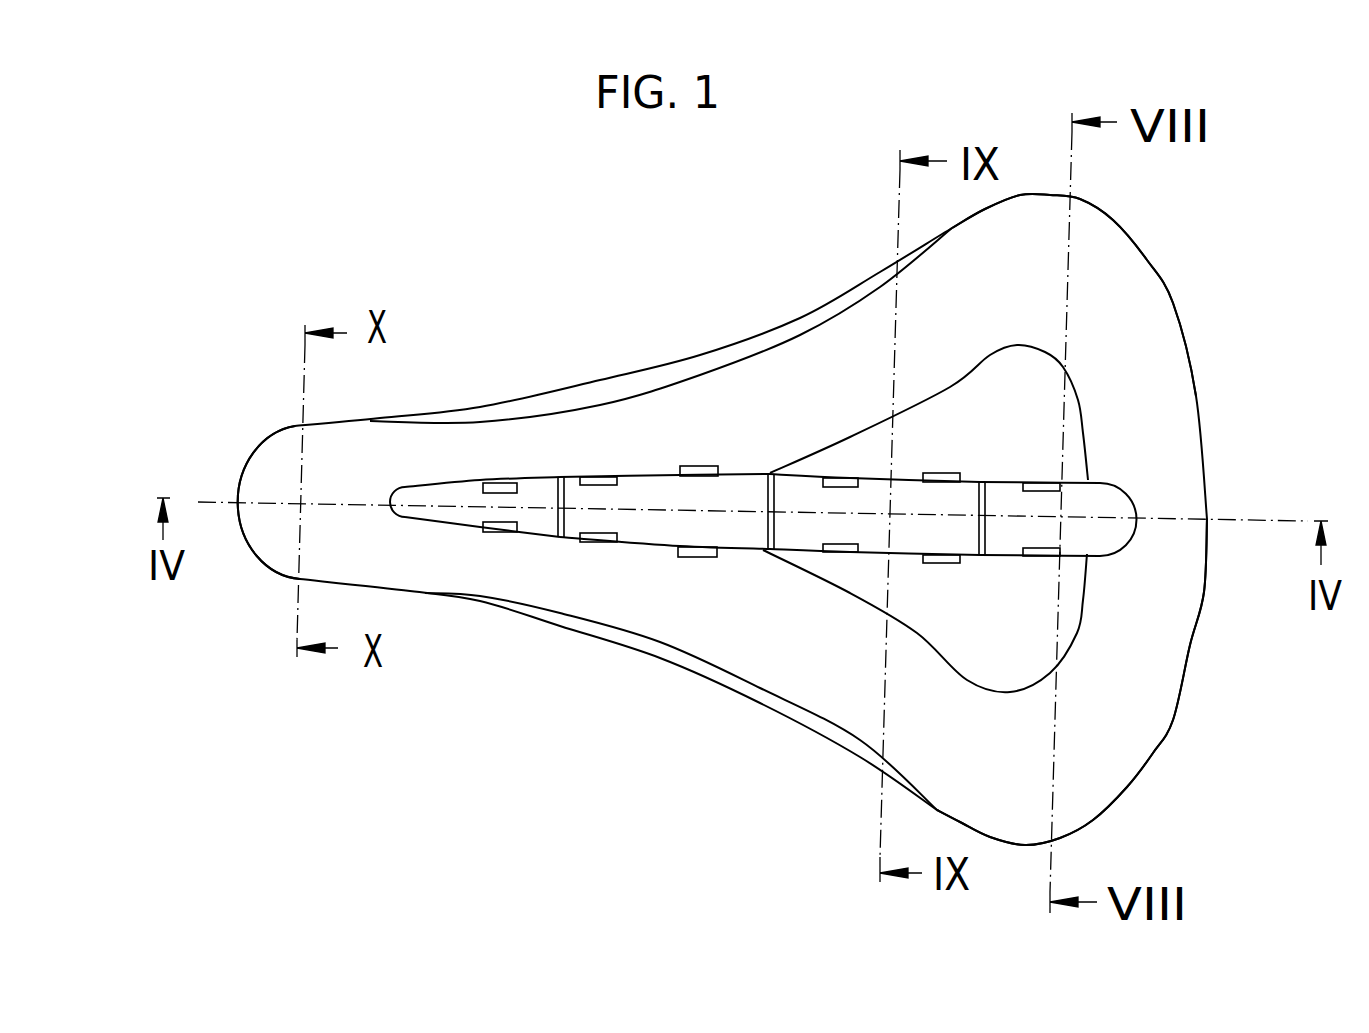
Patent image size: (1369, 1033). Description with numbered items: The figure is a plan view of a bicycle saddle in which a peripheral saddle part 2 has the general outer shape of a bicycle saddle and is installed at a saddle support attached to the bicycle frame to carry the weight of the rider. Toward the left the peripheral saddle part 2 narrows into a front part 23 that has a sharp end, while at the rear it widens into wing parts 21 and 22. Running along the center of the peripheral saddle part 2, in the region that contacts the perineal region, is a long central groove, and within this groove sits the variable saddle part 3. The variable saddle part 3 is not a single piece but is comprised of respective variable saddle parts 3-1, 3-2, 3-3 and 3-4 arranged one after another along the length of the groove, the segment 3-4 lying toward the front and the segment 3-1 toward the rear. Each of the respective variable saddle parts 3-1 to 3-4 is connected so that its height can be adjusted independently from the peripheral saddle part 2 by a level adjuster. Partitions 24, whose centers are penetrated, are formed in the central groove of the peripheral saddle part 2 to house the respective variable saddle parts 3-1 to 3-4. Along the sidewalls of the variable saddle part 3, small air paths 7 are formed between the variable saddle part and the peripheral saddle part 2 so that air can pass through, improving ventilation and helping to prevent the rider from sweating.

The peripheral saddle part 2 is at (1148, 306).
The wing part 21 is at (1111, 240).
The wing part 22 is at (1123, 744).
The front part 23 is at (275, 473).
The partitions 24 is at (763, 550).
The variable saddle part 3 is at (847, 482).
The variable saddle part 3-1 is at (1055, 532).
The variable saddle part 3-2 is at (872, 527).
The variable saddle part 3-3 is at (725, 526).
The variable saddle part 3-4 is at (447, 495).
The air paths 7 is at (697, 467).